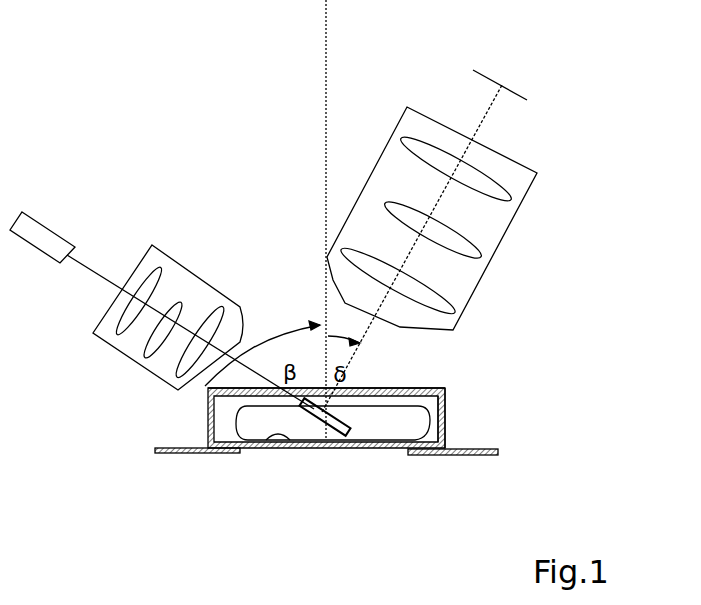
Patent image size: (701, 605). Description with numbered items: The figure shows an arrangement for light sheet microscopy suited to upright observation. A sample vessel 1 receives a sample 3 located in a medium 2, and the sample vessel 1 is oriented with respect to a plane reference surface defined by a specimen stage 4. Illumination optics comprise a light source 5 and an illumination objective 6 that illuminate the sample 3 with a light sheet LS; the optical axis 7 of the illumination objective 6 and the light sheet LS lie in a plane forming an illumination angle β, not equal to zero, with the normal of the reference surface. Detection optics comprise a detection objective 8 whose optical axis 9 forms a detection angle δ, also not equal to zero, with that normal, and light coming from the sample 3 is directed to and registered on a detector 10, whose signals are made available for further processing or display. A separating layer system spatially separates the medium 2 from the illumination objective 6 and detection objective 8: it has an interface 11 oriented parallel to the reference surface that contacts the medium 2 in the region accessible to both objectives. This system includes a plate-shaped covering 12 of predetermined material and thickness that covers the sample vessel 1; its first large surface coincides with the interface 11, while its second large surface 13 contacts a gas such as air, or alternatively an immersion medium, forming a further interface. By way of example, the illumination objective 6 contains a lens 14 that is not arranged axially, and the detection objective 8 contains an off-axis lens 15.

The sample vessel 1 is at (381, 419).
The medium 2 is at (222, 455).
The sample 3 is at (307, 457).
The specimen stage 4 is at (155, 447).
The light source 5 is at (45, 222).
The illumination objective 6 is at (185, 267).
The optical axis 7 is at (100, 273).
The detection objective 8 is at (383, 150).
The optical axis 9 is at (483, 123).
The detector 10 is at (487, 73).
The interface 11 is at (445, 410).
The plate-shaped covering 12 is at (445, 397).
The second large surface 13 is at (427, 388).
The lens 14 is at (140, 362).
The off-axis lens 15 is at (487, 253).
The light sheet LS is at (338, 437).